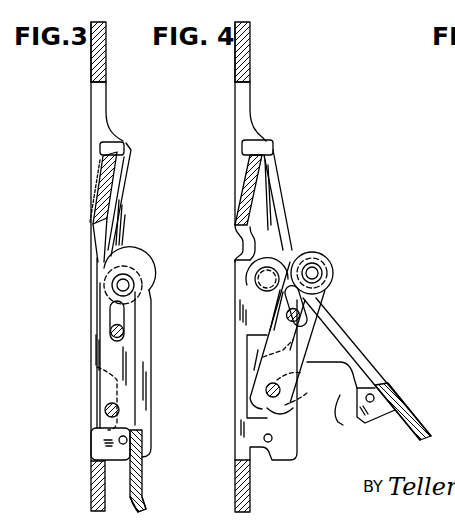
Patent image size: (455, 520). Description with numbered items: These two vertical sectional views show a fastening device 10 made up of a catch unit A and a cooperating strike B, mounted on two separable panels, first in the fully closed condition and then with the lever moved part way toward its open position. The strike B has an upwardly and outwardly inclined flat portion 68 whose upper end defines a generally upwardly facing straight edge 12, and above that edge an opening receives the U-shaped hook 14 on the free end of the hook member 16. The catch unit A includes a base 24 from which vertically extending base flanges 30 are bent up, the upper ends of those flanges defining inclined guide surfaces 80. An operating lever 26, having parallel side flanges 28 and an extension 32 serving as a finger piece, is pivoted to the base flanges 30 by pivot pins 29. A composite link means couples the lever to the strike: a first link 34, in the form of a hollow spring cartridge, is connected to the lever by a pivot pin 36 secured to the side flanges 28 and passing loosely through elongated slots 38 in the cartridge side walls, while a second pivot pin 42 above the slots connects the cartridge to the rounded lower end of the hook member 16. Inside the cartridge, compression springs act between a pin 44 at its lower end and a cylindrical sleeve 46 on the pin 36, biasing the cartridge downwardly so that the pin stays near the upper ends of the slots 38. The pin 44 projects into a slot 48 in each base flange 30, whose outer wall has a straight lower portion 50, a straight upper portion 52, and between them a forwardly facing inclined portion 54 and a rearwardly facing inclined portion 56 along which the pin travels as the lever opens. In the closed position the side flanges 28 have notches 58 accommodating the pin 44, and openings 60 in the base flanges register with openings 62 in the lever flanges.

In FIG. 3, the channel bar 10 is at (110, 57).
In FIG. 4, the channel bar 10 is at (250, 142).
In FIG. 3, the straight edge 12 is at (120, 138).
In FIG. 4, the straight edge 12 is at (268, 147).
In FIG. 3, the U-shaped hook 14 is at (132, 147).
In FIG. 4, the U-shaped hook 14 is at (258, 135).
In FIG. 3, the hook member 16 is at (133, 167).
In FIG. 4, the hook member 16 is at (280, 200).
In FIG. 3, the base 24 is at (90, 498).
In FIG. 4, the base 24 is at (249, 498).
In FIG. 3, the operating lever 26 is at (137, 432).
In FIG. 4, the operating lever 26 is at (347, 348).
In FIG. 3, the side flanges 28 is at (93, 438).
In FIG. 4, the side flanges 28 is at (363, 425).
In FIG. 4, the pivot pins 29 is at (265, 280).
In FIG. 3, the base flanges 30 is at (147, 350).
In FIG. 4, the base flanges 30 is at (287, 335).
In FIG. 3, the extension 32 is at (143, 498).
In FIG. 4, the extension 32 is at (422, 440).
In FIG. 3, the first link 34 is at (133, 342).
In FIG. 4, the first link 34 is at (307, 345).
In FIG. 3, the pivot pin 36 is at (120, 330).
In FIG. 4, the pivot pin 36 is at (298, 315).
In FIG. 3, the elongated slots 38 is at (122, 308).
In FIG. 3, the pivot pin 42 is at (147, 257).
In FIG. 4, the pivot pin 42 is at (315, 272).
In FIG. 3, the pin 44 is at (104, 408).
In FIG. 4, the pin 44 is at (266, 391).
In FIG. 3, the cylindrical sleeve 46 is at (118, 318).
In FIG. 4, the cylindrical sleeve 46 is at (303, 298).
In FIG. 4, the slot 48 is at (250, 357).
In FIG. 4, the straight lower wall portion 50 is at (283, 410).
In FIG. 4, the straight upper wall portion 52 is at (280, 345).
In FIG. 4, the inclined wall portion 54 is at (288, 403).
In FIG. 4, the inclined wall portion 56 is at (283, 377).
In FIG. 4, the notches 58 is at (338, 425).
In FIG. 4, the openings 60 is at (272, 438).
In FIG. 4, the openings 62 is at (380, 387).
In FIG. 3, the inclined flat portion 68 is at (103, 180).
In FIG. 4, the inclined flat portion 68 is at (242, 200).
In FIG. 3, the guide surfaces 80 is at (127, 240).
In FIG. 3, the catch unit A is at (83, 367).
In FIG. 3, the strike B is at (83, 70).